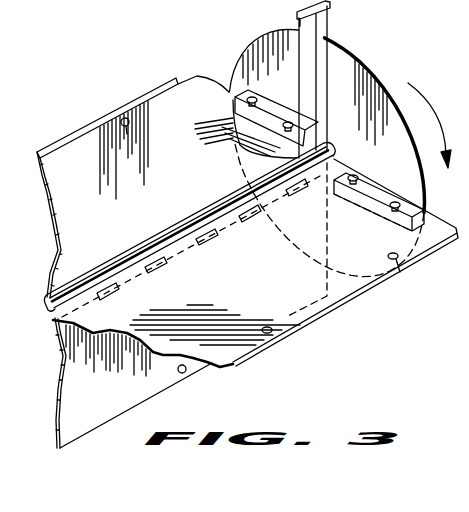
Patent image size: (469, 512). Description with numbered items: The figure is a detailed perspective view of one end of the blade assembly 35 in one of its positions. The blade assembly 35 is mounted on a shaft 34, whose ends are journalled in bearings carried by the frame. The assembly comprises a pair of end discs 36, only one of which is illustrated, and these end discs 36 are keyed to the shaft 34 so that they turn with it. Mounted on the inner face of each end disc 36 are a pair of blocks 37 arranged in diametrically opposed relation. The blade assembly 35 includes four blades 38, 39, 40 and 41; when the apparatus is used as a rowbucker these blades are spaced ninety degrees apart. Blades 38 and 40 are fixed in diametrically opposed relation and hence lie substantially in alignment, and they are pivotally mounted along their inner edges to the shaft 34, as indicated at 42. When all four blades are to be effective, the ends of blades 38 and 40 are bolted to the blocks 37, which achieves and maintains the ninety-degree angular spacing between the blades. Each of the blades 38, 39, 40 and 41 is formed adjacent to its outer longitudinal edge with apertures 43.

The shaft 34 is at (54, 318).
The blade assembly 35 is at (162, 78).
The end disc 36 is at (356, 70).
The block 37 is at (280, 112).
The blade 38 is at (210, 114).
The blade 39 is at (110, 215).
The blade 40 is at (277, 293).
The blade 41 is at (115, 394).
The pivotal mounting 42 is at (204, 242).
The aperture 43 is at (122, 118).